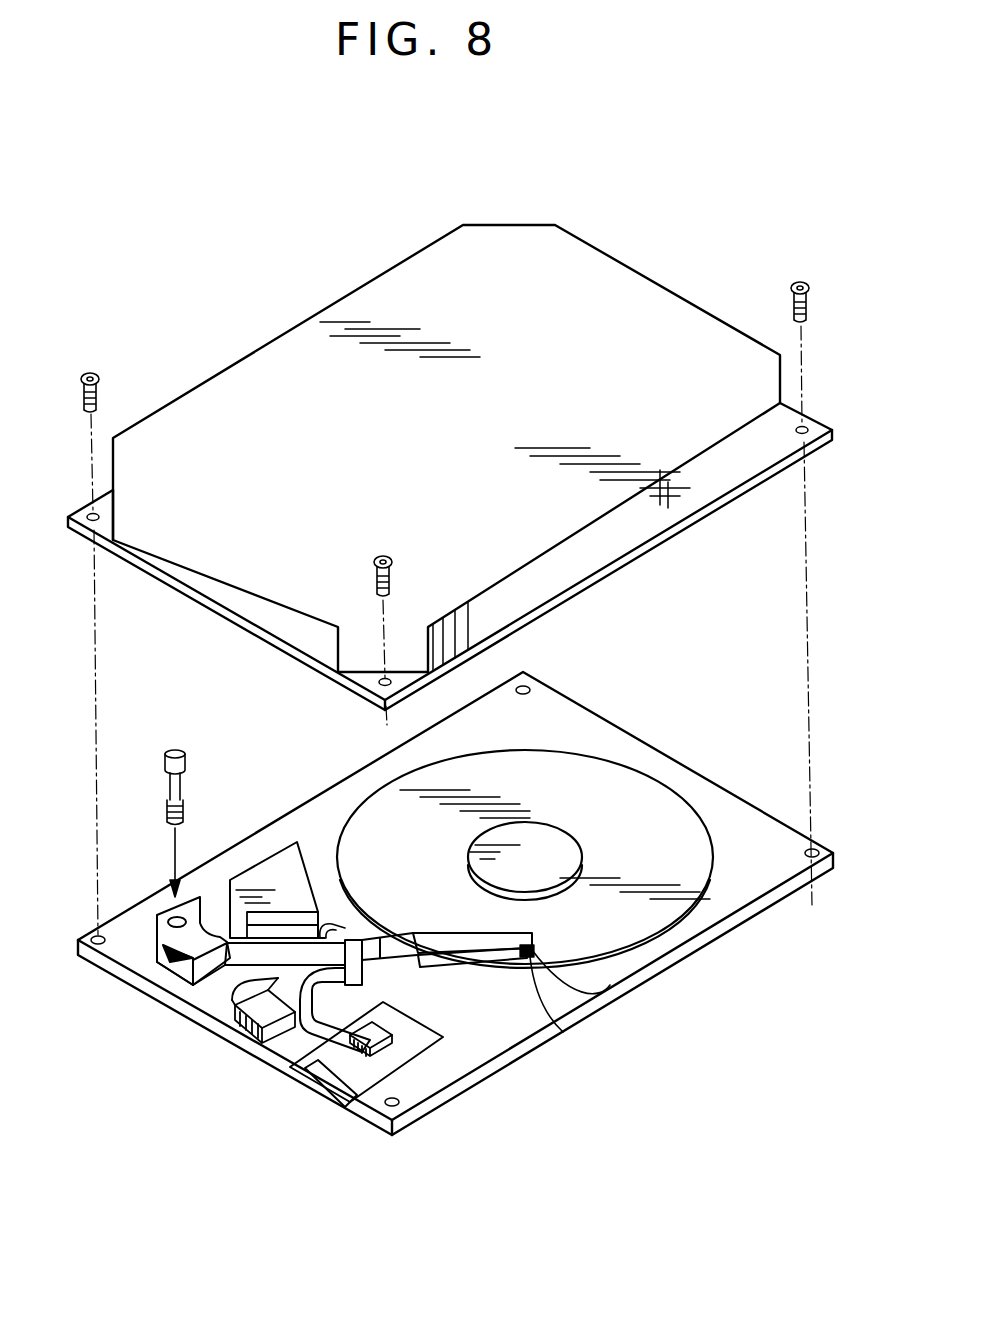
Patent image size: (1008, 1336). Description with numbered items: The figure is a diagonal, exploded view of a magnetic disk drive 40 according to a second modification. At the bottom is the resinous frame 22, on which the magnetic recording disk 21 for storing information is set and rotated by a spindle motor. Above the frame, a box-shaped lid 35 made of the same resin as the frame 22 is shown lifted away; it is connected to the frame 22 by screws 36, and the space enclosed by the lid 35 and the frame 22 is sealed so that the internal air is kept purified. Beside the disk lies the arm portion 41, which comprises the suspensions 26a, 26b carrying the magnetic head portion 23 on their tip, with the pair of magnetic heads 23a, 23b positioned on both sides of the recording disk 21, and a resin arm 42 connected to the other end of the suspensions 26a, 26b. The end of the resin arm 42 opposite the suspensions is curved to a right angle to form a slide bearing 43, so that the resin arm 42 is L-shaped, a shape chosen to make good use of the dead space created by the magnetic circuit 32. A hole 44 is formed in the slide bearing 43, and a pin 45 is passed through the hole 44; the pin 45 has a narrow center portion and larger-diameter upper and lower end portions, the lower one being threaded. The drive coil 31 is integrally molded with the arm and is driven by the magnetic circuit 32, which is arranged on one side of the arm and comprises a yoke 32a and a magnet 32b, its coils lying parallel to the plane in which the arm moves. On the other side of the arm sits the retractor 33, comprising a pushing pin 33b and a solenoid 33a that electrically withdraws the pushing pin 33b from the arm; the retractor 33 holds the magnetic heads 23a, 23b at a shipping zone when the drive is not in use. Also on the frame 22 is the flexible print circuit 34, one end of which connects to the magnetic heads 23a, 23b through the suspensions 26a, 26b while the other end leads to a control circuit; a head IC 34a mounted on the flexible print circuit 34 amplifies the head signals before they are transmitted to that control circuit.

The magnetic recording disk 21 is at (635, 795).
The resinous frame 22 is at (715, 912).
The magnetic head portion 23 is at (538, 955).
The magnetic head 23a is at (603, 988).
The magnetic head 23b is at (563, 1030).
The suspension 26a is at (447, 938).
The suspension 26b is at (443, 978).
The drive coil 31 is at (338, 930).
The magnetic circuit 32 is at (242, 865).
The yoke 32a is at (272, 868).
The magnet 32b is at (293, 925).
The retractor 33 is at (303, 1050).
The solenoid 33a is at (258, 1045).
The pushing pin 33b is at (232, 1012).
The flexible print circuit 34 is at (293, 1062).
The head IC 34a is at (398, 1050).
The lid 35 is at (626, 283).
The screws 36 is at (97, 373).
The magnetic disk drive 40 is at (818, 722).
The arm portion 41 is at (352, 912).
The resin arm 42 is at (240, 957).
The slide bearing 43 is at (143, 977).
The hole 44 is at (167, 908).
The pin 45 is at (165, 788).